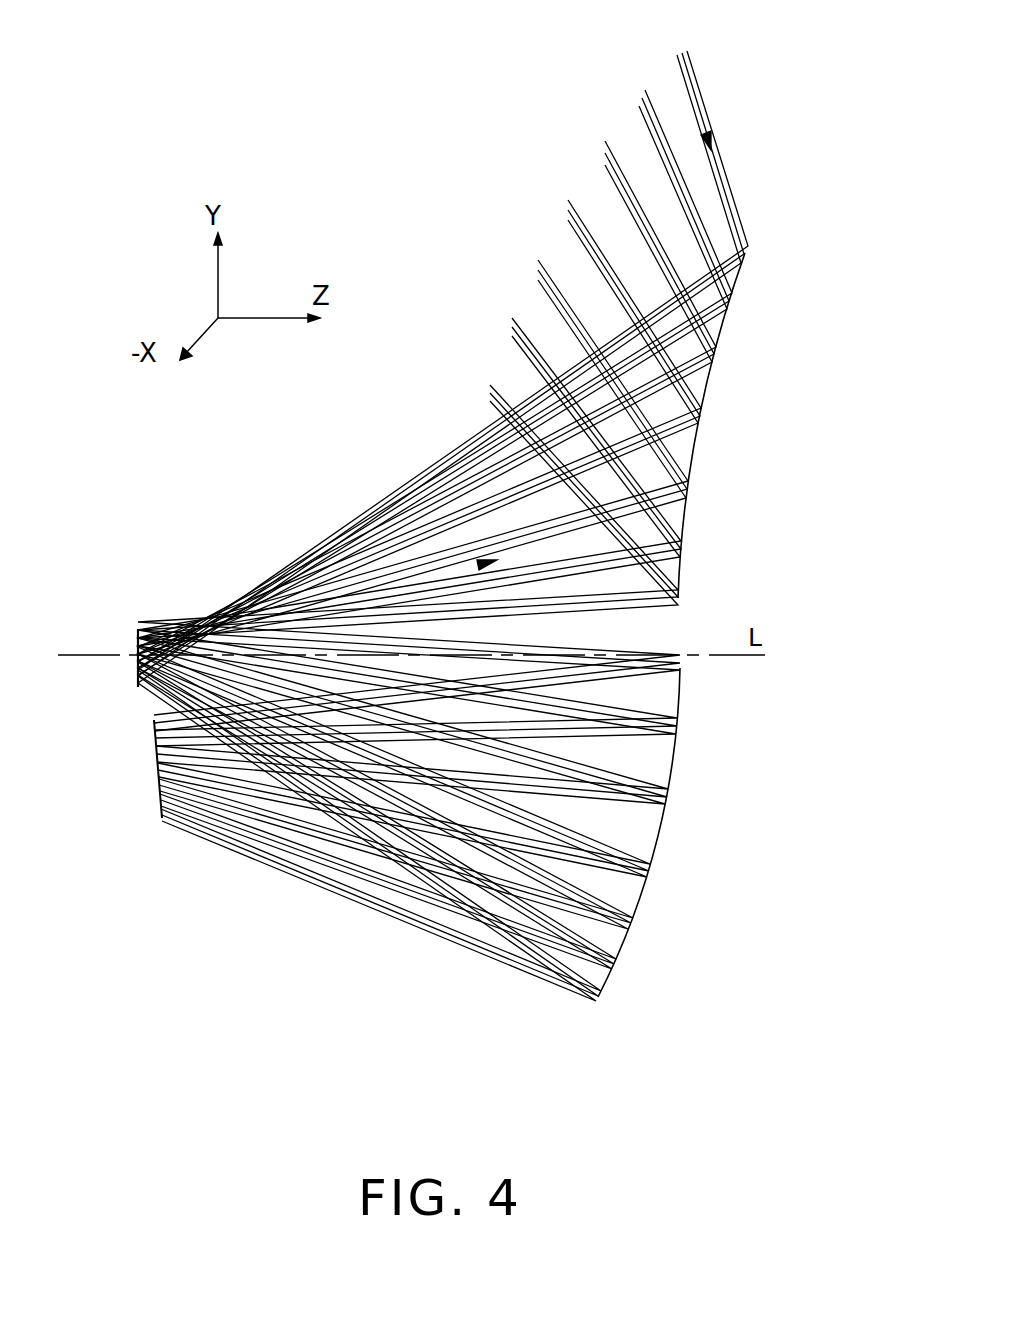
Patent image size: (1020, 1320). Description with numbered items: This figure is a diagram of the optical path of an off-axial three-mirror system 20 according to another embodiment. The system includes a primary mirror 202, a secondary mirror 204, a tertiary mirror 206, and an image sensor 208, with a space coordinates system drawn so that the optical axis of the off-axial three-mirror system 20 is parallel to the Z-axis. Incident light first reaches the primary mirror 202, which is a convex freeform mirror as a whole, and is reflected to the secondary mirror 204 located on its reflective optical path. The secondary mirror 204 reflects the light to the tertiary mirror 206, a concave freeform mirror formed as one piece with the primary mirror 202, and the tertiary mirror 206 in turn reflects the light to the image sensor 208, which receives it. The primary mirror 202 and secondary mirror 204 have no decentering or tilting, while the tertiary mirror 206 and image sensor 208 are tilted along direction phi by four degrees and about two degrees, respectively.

The off-axial three-mirror system 20 is at (399, 56).
The primary mirror 202 is at (708, 373).
The secondary mirror 204 is at (137, 641).
The tertiary mirror 206 is at (664, 839).
The image sensor 208 is at (155, 760).